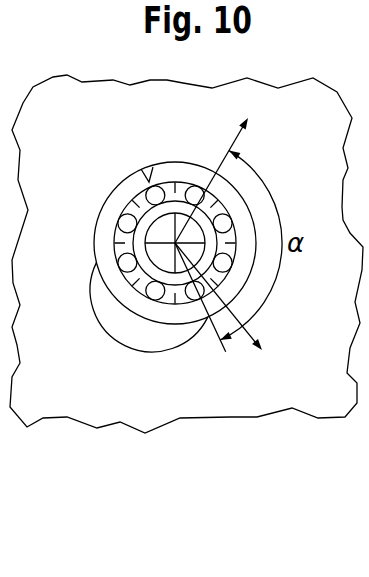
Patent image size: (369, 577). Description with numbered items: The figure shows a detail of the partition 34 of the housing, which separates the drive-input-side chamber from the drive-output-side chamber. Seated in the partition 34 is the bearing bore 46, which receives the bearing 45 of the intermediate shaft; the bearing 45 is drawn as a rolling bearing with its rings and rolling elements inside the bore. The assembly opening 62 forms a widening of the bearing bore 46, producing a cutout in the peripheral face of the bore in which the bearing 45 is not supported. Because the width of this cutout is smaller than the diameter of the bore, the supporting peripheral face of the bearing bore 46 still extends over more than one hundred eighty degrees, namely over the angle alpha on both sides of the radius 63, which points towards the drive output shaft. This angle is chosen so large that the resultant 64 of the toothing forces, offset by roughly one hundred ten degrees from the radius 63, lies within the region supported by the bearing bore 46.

The partition 34 is at (87, 395).
The bearing 45 is at (115, 205).
The bearing bore 46 is at (145, 178).
The assembly opening 62 is at (158, 338).
The radius 63 is at (214, 160).
The resultant 64 is at (247, 337).